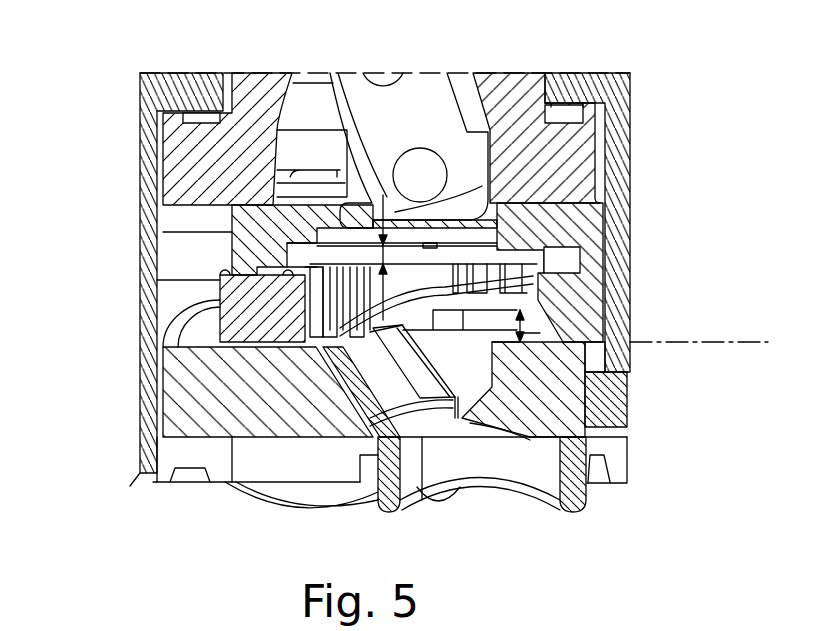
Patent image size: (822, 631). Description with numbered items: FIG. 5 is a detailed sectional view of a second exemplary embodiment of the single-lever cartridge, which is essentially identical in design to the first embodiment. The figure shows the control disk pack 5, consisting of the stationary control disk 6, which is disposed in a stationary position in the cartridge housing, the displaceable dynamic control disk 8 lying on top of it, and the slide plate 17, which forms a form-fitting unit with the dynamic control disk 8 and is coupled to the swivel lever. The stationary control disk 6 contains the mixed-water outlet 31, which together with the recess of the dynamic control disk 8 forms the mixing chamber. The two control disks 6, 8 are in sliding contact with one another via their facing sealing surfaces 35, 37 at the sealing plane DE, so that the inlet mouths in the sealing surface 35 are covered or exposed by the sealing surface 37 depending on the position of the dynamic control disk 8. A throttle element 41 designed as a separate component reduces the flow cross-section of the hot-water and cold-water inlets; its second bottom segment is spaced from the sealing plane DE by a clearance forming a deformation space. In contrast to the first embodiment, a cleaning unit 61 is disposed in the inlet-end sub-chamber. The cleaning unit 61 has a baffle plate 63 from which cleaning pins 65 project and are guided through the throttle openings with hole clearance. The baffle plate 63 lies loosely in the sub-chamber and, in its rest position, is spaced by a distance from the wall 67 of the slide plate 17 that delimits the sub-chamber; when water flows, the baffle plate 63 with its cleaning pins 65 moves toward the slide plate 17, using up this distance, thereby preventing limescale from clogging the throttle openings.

The control disk pack 5 is at (48, 280).
The stationary control disk 6 is at (178, 390).
The dynamic control disk 8 is at (222, 298).
The slide plate 17 is at (232, 240).
The mixed-water outlet 31 is at (480, 383).
The sealing surface 35 is at (597, 403).
The sealing surface 37 is at (605, 370).
The throttle element 41 is at (378, 332).
The cleaning unit 61 is at (718, 85).
The baffle plate 63 is at (545, 200).
The cleaning pins 65 is at (562, 230).
The wall 67 is at (340, 245).
The sealing plane DE is at (743, 343).